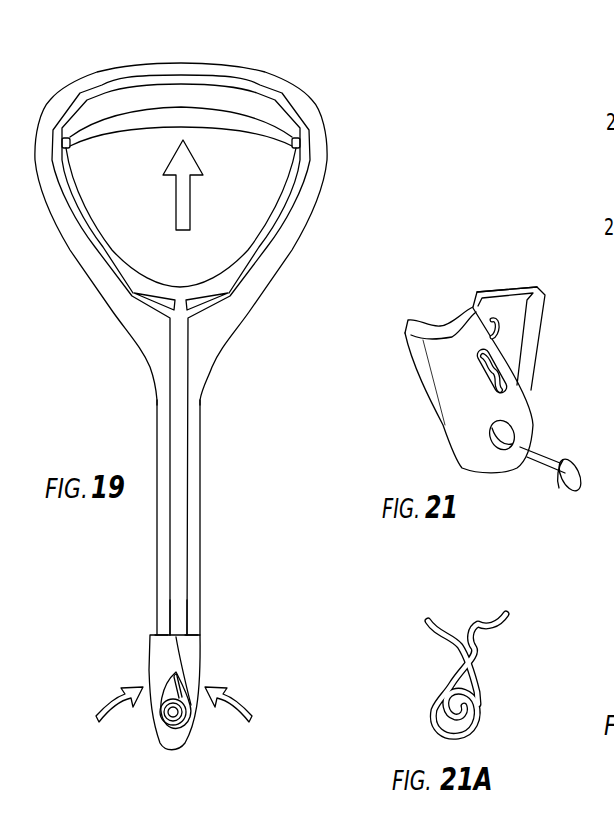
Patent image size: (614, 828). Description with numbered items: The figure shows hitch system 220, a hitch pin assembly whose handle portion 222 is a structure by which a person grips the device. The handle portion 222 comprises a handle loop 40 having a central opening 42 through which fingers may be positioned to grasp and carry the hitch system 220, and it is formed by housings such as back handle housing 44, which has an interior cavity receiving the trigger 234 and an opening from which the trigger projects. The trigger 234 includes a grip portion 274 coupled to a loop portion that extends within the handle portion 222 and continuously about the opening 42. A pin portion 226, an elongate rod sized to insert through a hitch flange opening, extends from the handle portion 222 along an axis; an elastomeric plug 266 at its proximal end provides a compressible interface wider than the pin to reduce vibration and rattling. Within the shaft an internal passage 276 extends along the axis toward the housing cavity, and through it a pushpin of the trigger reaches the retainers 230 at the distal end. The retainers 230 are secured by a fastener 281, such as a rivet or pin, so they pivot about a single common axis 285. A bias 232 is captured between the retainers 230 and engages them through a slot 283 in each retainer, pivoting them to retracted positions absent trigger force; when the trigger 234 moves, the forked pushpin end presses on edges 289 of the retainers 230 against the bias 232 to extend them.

In FIG. 19, the hitch system 220 is at (38, 98).
In FIG. 19, the handle portion 222 is at (323, 140).
In FIG. 19, the grip portion 274 is at (118, 112).
In FIG. 19, the central opening 42 is at (255, 208).
In FIG. 19, the back handle housing 44 is at (295, 248).
In FIG. 19, the trigger 234 is at (243, 283).
In FIG. 19, the handle loop 40 is at (235, 337).
In FIG. 19, the elastomeric plug 266 is at (207, 381).
In FIG. 19, the pin portion 226 is at (200, 476).
In FIG. 19, the internal passage 276 is at (187, 537).
In FIG. 19, the retainers 230 is at (150, 655).
In FIG. 21, the retainers 230 is at (536, 360).
In FIG. 19, the bias 232 is at (165, 720).
In FIG. 21, the bias 232 is at (504, 373).
In FIG. 21A, the bias 232 is at (430, 706).
In FIG. 19, the axis 285 is at (185, 725).
In FIG. 21, the edges 289 is at (512, 283).
In FIG. 21, the slot 283 is at (483, 372).
In FIG. 21, the fastener 281 is at (543, 472).